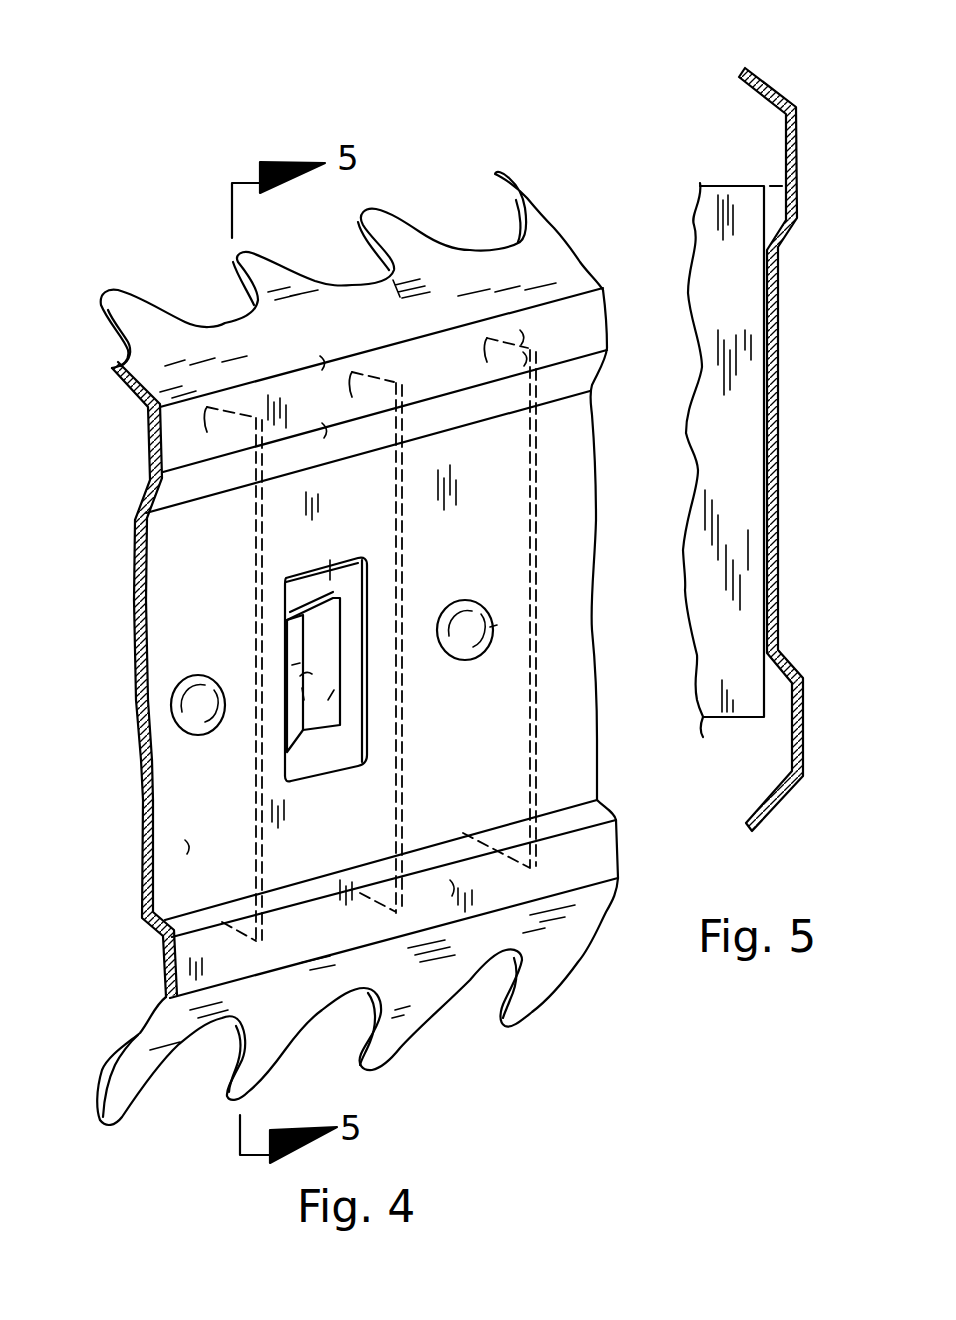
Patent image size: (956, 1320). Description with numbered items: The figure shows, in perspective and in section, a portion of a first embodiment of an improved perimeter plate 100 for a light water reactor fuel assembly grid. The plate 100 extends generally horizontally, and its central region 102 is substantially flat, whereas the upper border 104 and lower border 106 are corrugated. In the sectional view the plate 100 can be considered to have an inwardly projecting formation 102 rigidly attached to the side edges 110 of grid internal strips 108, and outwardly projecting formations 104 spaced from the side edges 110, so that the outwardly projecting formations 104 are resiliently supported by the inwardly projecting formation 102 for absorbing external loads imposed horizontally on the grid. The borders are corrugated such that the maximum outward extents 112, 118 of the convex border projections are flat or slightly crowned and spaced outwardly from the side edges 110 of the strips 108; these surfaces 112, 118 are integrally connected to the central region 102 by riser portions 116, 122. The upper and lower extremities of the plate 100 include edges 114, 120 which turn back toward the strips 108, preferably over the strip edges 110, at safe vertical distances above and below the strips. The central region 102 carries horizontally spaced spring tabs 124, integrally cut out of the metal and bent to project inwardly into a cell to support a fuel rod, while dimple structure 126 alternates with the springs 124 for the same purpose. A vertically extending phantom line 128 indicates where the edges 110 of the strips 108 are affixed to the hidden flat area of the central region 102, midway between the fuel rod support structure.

In FIG. 4, the perimeter plate 100 is at (114, 613).
In FIG. 5, the perimeter plate 100 is at (786, 448).
In FIG. 4, the central region 102 is at (351, 583).
In FIG. 5, the central region 102 is at (778, 497).
In FIG. 4, the upper border 104 is at (577, 310).
In FIG. 5, the upper border 104 is at (803, 160).
In FIG. 4, the lower border 106 is at (618, 842).
In FIG. 5, the lower border 106 is at (810, 739).
In FIG. 5, the grid internal strip 108 is at (728, 186).
In FIG. 5, the side edge 110 is at (775, 186).
In FIG. 5, the maximum outward extent 112 is at (797, 193).
In FIG. 5, the edge 114 is at (768, 85).
In FIG. 5, the riser portion 116 is at (783, 240).
In FIG. 5, the maximum outward extent 118 is at (803, 763).
In FIG. 5, the edge 120 is at (770, 820).
In FIG. 5, the riser portion 122 is at (780, 663).
In FIG. 4, the spring tab 124 is at (318, 690).
In FIG. 4, the dimple structure 126 is at (180, 713).
In FIG. 4, the phantom line 128 is at (257, 528).